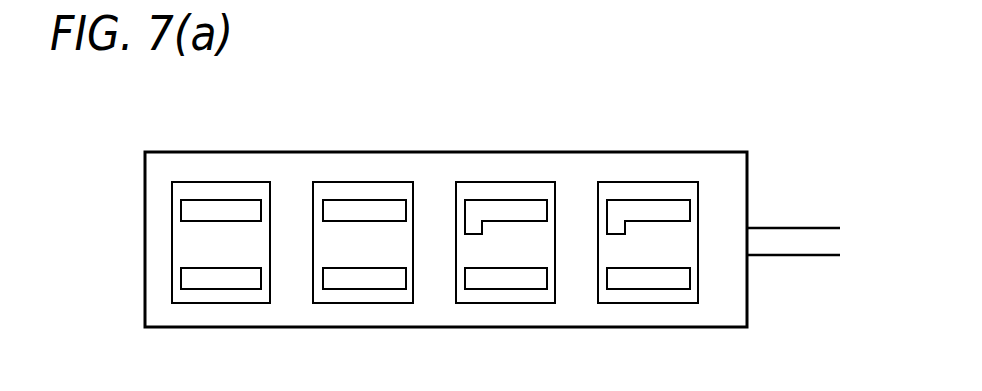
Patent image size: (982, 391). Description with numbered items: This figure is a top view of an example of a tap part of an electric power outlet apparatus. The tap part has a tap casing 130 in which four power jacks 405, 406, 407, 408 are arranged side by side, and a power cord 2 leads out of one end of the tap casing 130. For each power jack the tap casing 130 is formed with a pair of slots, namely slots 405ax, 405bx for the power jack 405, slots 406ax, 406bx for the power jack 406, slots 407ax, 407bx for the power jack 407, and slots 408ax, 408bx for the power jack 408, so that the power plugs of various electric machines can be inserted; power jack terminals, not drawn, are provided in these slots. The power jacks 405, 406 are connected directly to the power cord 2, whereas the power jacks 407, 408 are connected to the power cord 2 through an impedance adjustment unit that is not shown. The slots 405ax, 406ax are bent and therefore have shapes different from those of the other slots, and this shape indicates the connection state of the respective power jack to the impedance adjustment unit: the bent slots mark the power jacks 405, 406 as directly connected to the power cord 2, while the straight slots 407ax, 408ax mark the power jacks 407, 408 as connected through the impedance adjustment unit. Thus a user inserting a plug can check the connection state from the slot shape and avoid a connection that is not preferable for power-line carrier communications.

The tap casing 130 is at (733, 152).
The power cord 2 is at (792, 240).
The power jack 405 is at (669, 231).
The slot 405ax is at (620, 208).
The slot 405bx is at (632, 280).
The power jack 406 is at (525, 231).
The slot 406ax is at (473, 208).
The slot 406bx is at (487, 280).
The power jack 407 is at (384, 231).
The slot 407ax is at (330, 208).
The slot 407bx is at (338, 277).
The power jack 408 is at (241, 231).
The slot 408ax is at (200, 208).
The slot 408bx is at (200, 277).